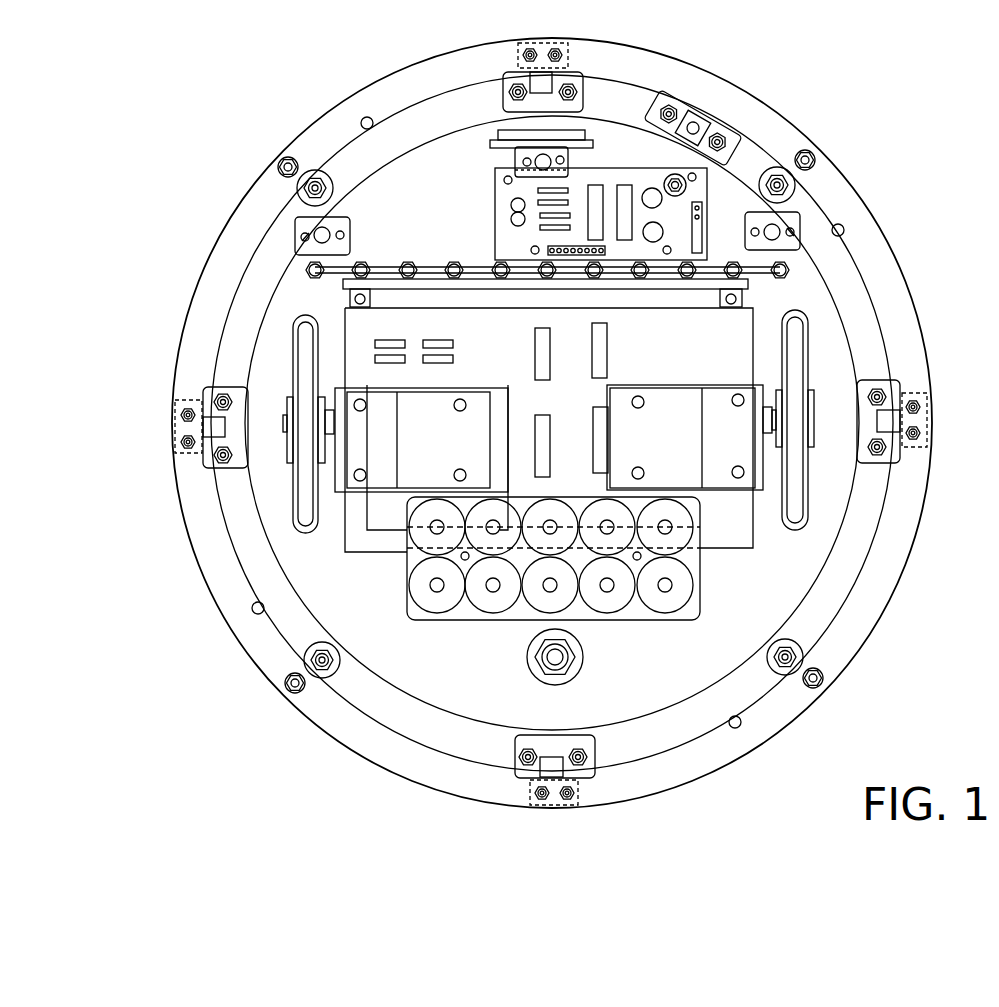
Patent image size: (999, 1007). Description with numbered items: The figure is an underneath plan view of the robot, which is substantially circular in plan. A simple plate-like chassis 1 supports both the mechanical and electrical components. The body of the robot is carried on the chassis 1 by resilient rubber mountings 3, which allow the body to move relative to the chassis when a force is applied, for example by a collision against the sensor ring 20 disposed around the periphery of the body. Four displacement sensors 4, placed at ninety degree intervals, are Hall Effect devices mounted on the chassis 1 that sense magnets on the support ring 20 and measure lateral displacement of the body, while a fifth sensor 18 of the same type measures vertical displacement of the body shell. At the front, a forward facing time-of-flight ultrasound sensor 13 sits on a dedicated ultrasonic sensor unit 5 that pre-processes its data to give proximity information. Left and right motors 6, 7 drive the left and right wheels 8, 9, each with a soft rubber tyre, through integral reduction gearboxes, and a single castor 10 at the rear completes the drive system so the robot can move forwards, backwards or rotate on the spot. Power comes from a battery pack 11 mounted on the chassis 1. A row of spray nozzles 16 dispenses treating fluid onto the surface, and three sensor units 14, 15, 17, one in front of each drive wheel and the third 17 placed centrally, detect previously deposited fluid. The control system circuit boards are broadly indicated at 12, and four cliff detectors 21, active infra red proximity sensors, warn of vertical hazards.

The plate-like chassis 1 is at (905, 230).
The resilient rubber mountings 3 is at (334, 190).
The displacement sensors 4 is at (575, 75).
The ultrasonic sensor unit 5 is at (492, 220).
The left motor 6 is at (444, 408).
The right motor 7 is at (656, 410).
The left wheel 8 is at (297, 497).
The right wheel 9 is at (806, 478).
The castor 10 is at (532, 672).
The battery pack 11 is at (706, 603).
The control system circuit boards and components 12 is at (338, 287).
The ultrasound sensor 13 is at (482, 150).
The sensor unit 14 is at (291, 222).
The sensor unit 15 is at (803, 208).
The row of spray nozzles 16 is at (303, 266).
The sensor unit 17 is at (505, 163).
The fifth sensor 18 is at (722, 116).
The sensor ring 20 is at (362, 752).
The cliff detectors 21 is at (278, 158).